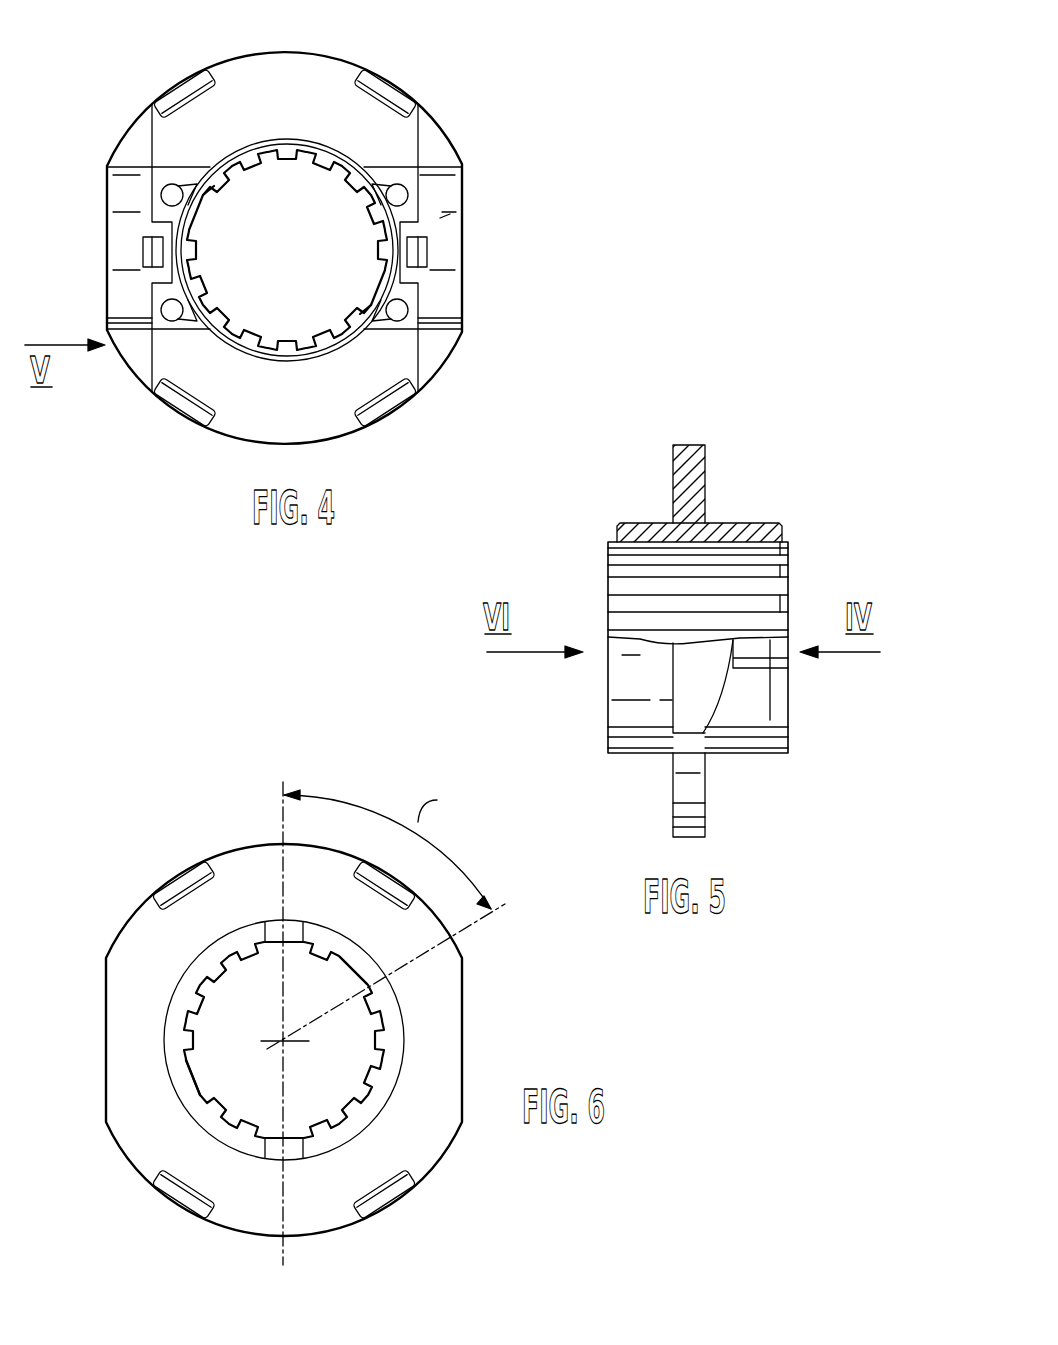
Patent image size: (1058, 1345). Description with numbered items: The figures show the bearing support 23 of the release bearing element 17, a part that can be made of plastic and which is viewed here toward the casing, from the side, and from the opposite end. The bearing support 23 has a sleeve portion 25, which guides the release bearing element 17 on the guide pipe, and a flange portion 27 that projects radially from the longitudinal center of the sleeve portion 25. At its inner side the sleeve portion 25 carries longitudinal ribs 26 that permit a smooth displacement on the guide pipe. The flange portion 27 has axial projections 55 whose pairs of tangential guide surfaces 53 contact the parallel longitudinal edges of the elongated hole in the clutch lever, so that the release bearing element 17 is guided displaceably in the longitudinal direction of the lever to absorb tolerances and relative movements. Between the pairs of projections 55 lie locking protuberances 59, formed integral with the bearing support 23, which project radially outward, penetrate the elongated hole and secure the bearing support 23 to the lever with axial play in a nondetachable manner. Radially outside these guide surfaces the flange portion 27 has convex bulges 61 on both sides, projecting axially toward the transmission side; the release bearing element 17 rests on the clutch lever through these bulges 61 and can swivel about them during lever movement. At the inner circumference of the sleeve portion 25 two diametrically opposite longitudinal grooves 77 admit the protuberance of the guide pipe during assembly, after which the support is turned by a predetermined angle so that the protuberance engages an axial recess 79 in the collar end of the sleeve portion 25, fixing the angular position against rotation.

In FIG. 4, the release bearing element 17 is at (192, 95).
In FIG. 6, the release bearing element 17 is at (284, 1040).
In FIG. 4, the bearing support 23 is at (180, 436).
In FIG. 5, the bearing support 23 is at (758, 770).
In FIG. 6, the bearing support 23 is at (156, 847).
In FIG. 5, the sleeve portion 25 is at (656, 757).
In FIG. 6, the sleeve portion 25 is at (175, 1058).
In FIG. 4, the longitudinal ribs 26 is at (232, 322).
In FIG. 5, the longitudinal ribs 26 is at (628, 563).
In FIG. 6, the longitudinal ribs 26 is at (205, 1000).
In FIG. 4, the flange portion 27 is at (321, 57).
In FIG. 5, the flange portion 27 is at (700, 500).
In FIG. 6, the flange portion 27 is at (433, 1157).
In FIG. 4, the tangential guide surfaces 53 is at (146, 192).
In FIG. 4, the axial projections 55 is at (176, 188).
In FIG. 4, the locking protuberances 59 is at (147, 250).
In FIG. 4, the convex bulges 61 is at (447, 217).
In FIG. 5, the convex bulges 61 is at (730, 688).
In FIG. 4, the longitudinal grooves 77 is at (204, 190).
In FIG. 6, the longitudinal grooves 77 is at (370, 994).
In FIG. 6, the axial recess 79 is at (283, 930).